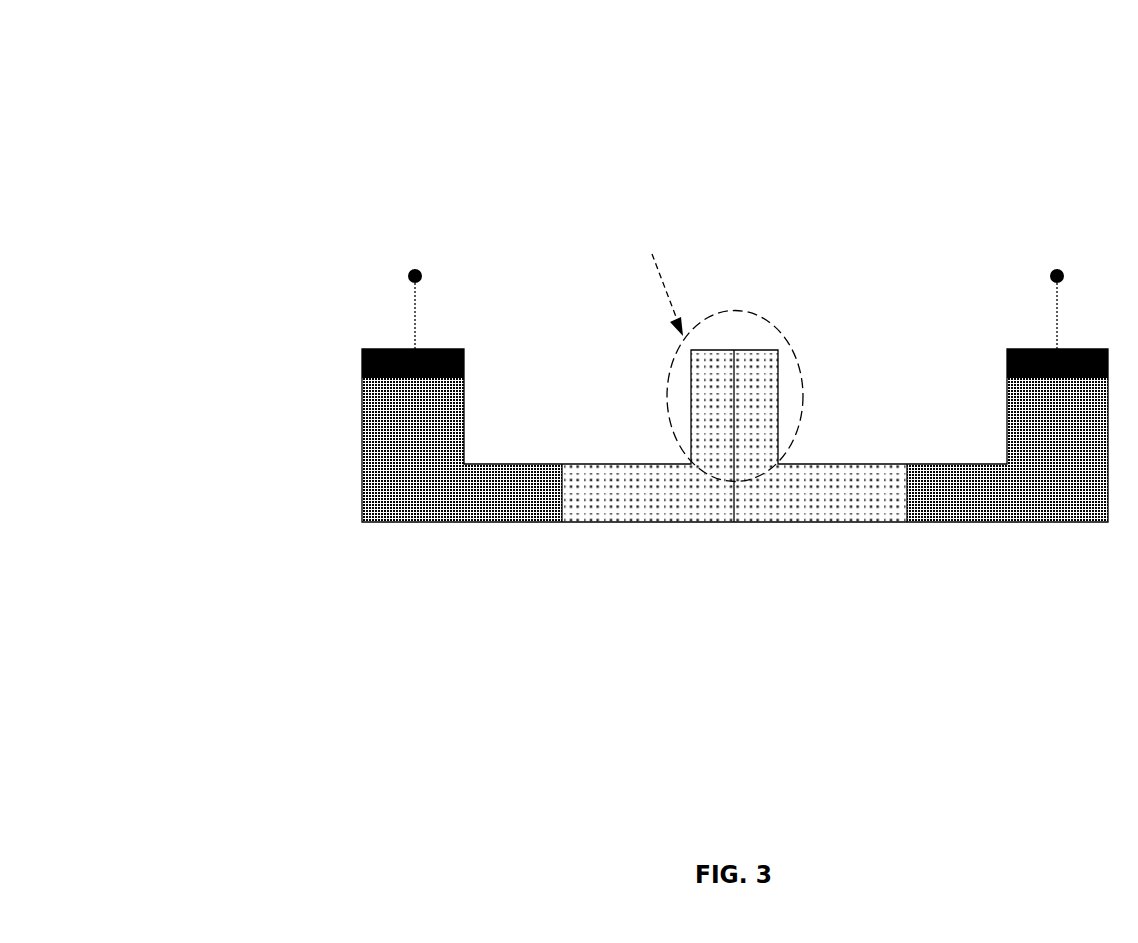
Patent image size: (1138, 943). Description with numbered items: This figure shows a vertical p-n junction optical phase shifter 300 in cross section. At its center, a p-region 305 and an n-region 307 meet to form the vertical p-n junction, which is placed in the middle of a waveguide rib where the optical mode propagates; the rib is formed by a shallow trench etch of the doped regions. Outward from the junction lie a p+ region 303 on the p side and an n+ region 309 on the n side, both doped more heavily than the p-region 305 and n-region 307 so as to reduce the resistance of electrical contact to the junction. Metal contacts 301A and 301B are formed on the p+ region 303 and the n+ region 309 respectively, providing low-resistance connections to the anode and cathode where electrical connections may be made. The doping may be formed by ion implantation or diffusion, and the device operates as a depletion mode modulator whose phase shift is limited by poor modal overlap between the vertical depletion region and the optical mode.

The p-n junction optical phase shifter 300 is at (309, 117).
The contact 301A is at (442, 376).
The contact 301B is at (1087, 376).
The p+ region 303 is at (493, 506).
The p-region 305 is at (683, 506).
The n-region 307 is at (862, 506).
The n+ region 309 is at (1054, 506).